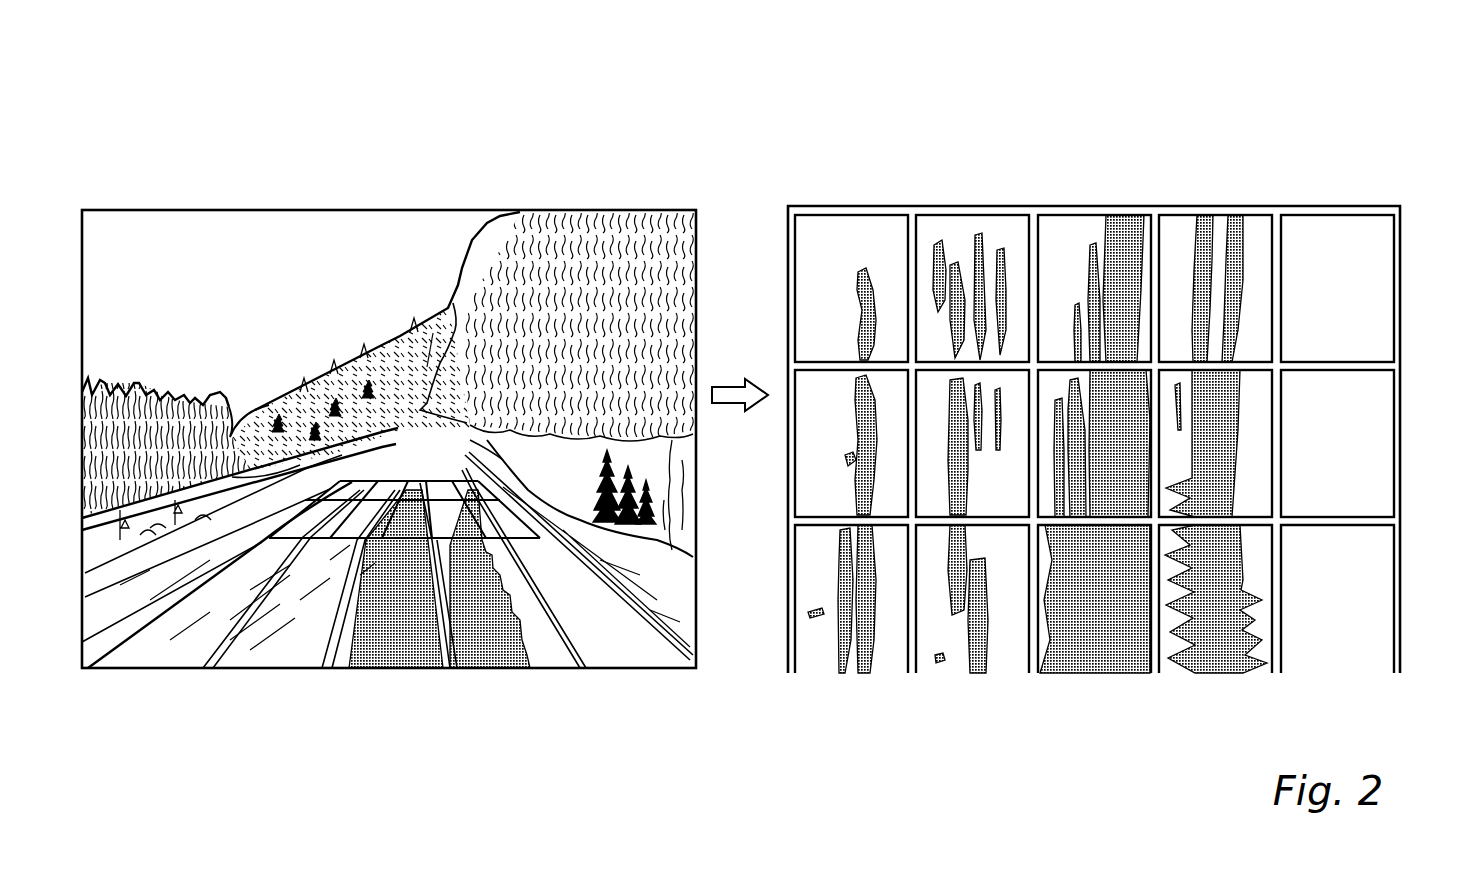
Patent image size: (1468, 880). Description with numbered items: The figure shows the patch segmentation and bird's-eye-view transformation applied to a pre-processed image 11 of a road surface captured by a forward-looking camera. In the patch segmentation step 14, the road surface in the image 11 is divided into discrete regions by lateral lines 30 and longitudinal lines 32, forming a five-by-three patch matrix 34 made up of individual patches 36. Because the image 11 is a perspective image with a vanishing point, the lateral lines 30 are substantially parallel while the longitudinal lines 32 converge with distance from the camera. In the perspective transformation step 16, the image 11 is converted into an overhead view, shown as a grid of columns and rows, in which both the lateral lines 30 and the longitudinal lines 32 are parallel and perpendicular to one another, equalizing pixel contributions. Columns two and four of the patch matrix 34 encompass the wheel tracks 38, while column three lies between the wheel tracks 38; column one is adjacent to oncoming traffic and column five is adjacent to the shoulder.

The pre-processed image 11 is at (583, 196).
The patch segmentation step 14 is at (435, 195).
The perspective transformation step 16 is at (1143, 172).
The lateral lines 30 is at (343, 526).
The longitudinal lines 32 is at (378, 512).
The patch matrix 34 is at (413, 526).
The patch 36 is at (296, 620).
The wheel tracks 38 is at (450, 524).